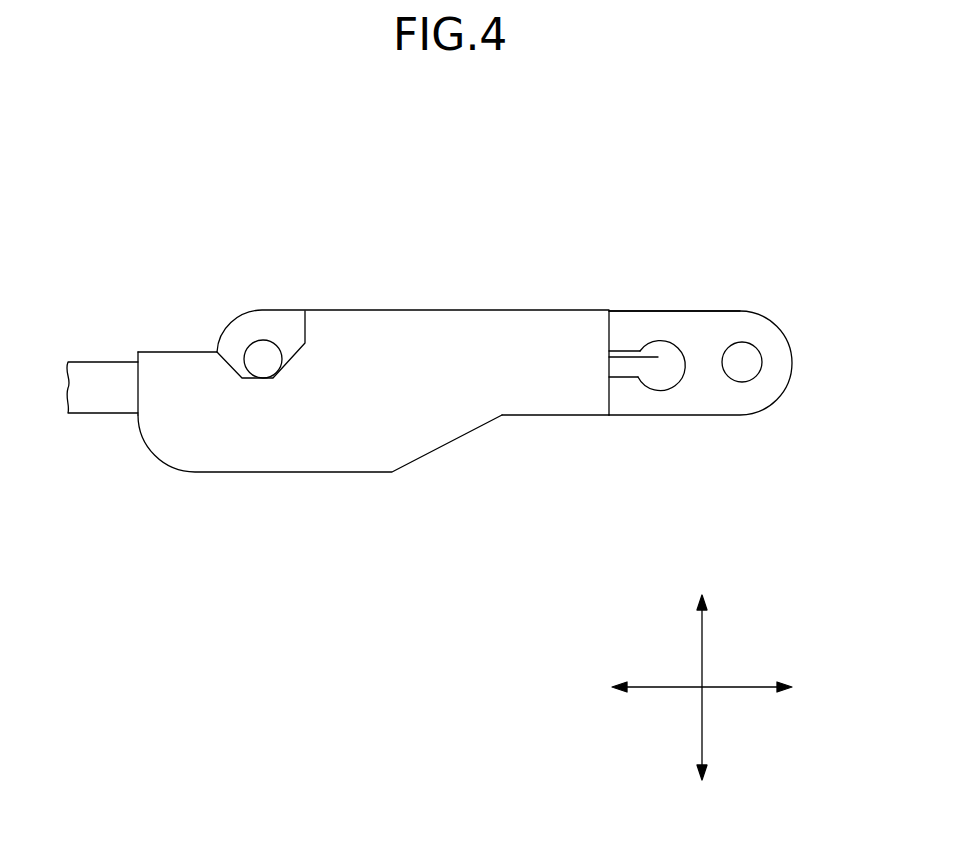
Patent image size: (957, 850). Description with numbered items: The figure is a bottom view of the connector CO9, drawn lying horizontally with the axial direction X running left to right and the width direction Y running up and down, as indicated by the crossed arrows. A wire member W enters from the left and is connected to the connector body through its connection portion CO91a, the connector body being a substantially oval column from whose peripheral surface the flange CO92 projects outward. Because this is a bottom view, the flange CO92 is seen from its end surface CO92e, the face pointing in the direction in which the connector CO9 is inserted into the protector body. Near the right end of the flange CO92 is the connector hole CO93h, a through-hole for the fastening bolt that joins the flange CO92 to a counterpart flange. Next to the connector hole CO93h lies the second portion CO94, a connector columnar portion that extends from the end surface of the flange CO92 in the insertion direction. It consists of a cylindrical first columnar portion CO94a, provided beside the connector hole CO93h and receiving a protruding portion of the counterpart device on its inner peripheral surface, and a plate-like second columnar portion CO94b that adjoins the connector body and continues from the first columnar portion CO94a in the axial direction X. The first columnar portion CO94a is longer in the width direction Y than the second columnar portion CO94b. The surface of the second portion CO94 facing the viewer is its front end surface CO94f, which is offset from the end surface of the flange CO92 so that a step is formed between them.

The wire member W is at (100, 376).
The connector CO9 is at (653, 151).
The connection portion CO91a is at (367, 440).
The flange CO92 is at (702, 337).
The end surface CO92e is at (673, 322).
The connector hole CO93h is at (747, 342).
The second portion CO94 is at (634, 464).
The first columnar portion CO94a is at (678, 380).
The second columnar portion CO94b is at (620, 370).
The front end surface CO94f is at (609, 357).
The axial direction X is at (747, 687).
The width direction Y is at (702, 657).